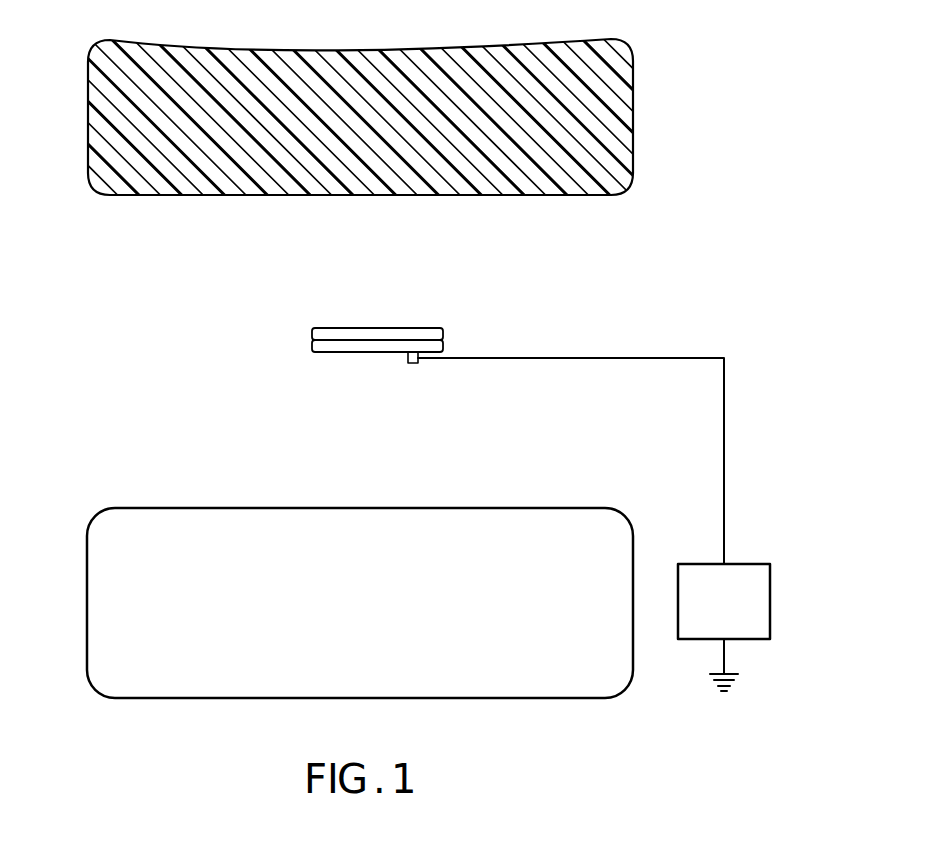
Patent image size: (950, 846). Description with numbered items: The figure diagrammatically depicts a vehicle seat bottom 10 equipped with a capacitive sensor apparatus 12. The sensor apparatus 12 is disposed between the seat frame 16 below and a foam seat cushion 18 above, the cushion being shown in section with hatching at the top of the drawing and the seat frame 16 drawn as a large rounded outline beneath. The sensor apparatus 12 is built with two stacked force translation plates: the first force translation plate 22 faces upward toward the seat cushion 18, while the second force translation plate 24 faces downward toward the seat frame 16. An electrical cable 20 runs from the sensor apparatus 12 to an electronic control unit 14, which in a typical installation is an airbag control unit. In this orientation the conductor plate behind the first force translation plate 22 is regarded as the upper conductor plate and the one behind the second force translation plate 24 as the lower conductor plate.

The seat bottom 10 is at (692, 212).
The sensor apparatus 12 is at (291, 319).
The electronic control unit (ECU) 14 is at (771, 605).
The seat frame 16 is at (87, 617).
The foam seat cushion 18 is at (634, 120).
The electrical cable 20 is at (586, 358).
The first force translation plate 22 is at (398, 328).
The second force translation plate 24 is at (358, 352).